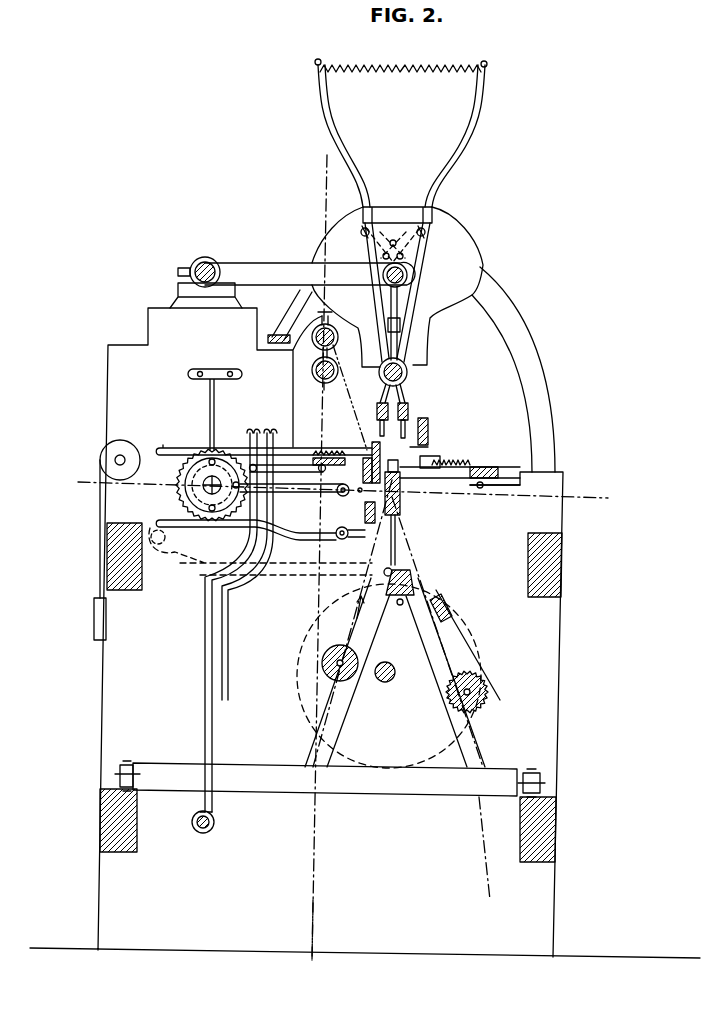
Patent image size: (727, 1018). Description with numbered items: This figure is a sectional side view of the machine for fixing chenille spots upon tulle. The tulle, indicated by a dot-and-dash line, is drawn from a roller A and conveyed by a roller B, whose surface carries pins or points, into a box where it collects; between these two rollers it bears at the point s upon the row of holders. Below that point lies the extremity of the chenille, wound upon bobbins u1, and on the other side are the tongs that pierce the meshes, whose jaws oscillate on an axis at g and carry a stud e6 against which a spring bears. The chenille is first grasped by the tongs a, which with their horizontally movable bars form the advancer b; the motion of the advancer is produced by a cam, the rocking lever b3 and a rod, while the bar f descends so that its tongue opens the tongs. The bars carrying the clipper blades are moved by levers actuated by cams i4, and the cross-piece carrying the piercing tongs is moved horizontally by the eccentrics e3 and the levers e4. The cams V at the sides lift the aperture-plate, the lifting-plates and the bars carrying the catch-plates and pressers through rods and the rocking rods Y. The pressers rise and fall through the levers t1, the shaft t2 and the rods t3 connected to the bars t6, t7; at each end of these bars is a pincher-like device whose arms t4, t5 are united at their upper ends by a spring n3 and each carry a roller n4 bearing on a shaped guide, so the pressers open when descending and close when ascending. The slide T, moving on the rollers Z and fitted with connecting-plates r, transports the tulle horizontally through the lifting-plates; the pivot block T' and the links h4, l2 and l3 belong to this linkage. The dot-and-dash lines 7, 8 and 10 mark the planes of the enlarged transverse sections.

The spring n3 is at (401, 77).
The pincher arm t4 is at (353, 213).
The pincher arm t5 is at (441, 213).
The roller n4 is at (393, 237).
The section line 7 is at (319, 550).
The section line 10 is at (309, 940).
The lever t1 is at (310, 273).
The shaft t2 is at (206, 271).
The rod t3 is at (397, 311).
The presser bar t6 is at (373, 418).
The presser bar t7 is at (411, 416).
The bar carrying catch-plate f is at (424, 432).
The bobbin u1 is at (315, 351).
The tongs a is at (365, 462).
The bearing point s is at (392, 509).
The advancer b is at (209, 459).
The axis of oscillation g is at (349, 496).
The lever bar h4 is at (264, 458).
The link l2 is at (294, 496).
The section line 8 is at (346, 499).
The link l3 is at (260, 536).
The stud e6 is at (460, 478).
The eccentric e3 is at (222, 458).
The cam i4 is at (205, 463).
The rocking lever b3 is at (206, 622).
The lever e4 is at (222, 660).
The rocking rod Y is at (260, 551).
The pivot block T' is at (395, 657).
The connecting-plate r is at (401, 535).
The slide T is at (325, 779).
The roller Z is at (330, 770).
The roller A is at (340, 654).
The cam V is at (389, 676).
The roller B is at (472, 692).